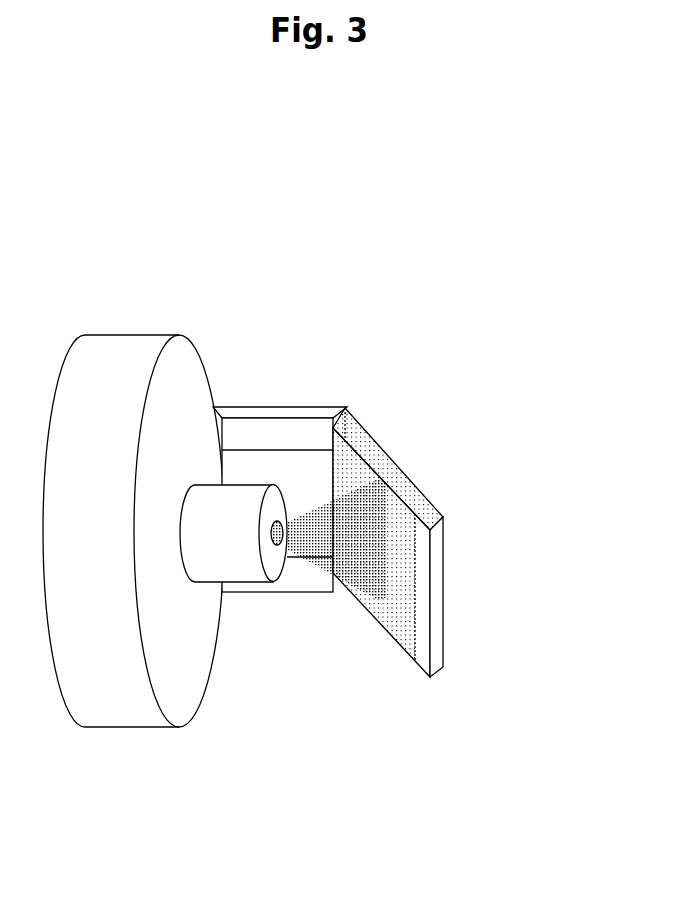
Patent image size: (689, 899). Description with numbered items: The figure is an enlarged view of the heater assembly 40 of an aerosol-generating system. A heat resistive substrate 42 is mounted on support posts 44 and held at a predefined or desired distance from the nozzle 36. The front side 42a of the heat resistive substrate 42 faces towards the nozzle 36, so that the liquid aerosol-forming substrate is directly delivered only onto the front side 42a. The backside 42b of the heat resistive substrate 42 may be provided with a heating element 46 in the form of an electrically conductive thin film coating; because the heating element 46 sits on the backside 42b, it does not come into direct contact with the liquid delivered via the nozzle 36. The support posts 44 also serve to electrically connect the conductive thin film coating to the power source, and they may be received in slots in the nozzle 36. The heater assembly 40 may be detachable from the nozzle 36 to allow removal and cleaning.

The nozzle 36 is at (235, 565).
The heater assembly 40 is at (377, 510).
The heat resistive substrate 42 is at (454, 594).
The front side 42a is at (403, 637).
The backside 42b is at (417, 558).
The support posts 44 is at (269, 407).
The heating element 46 is at (395, 518).